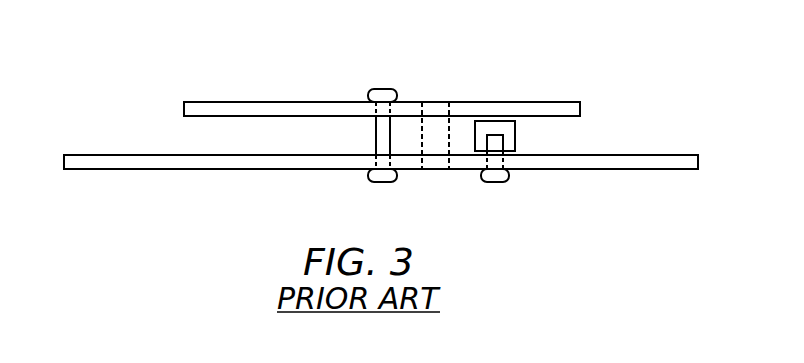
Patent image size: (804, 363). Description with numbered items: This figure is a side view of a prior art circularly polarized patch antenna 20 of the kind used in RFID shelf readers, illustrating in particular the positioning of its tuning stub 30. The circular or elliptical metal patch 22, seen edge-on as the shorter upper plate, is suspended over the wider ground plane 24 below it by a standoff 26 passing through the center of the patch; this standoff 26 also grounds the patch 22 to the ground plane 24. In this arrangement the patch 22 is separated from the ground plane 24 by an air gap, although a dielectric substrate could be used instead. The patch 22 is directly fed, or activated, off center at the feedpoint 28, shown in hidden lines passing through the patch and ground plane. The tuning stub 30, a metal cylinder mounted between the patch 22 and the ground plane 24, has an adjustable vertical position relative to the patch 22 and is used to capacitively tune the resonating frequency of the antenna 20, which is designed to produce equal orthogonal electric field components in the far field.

The circularly polarized patch antenna 20 is at (620, 34).
The metal patch 22 is at (236, 102).
The ground plane 24 is at (185, 182).
The standoff 26 is at (372, 142).
The feedpoint 28 is at (436, 102).
The tuning stub 30 is at (515, 138).